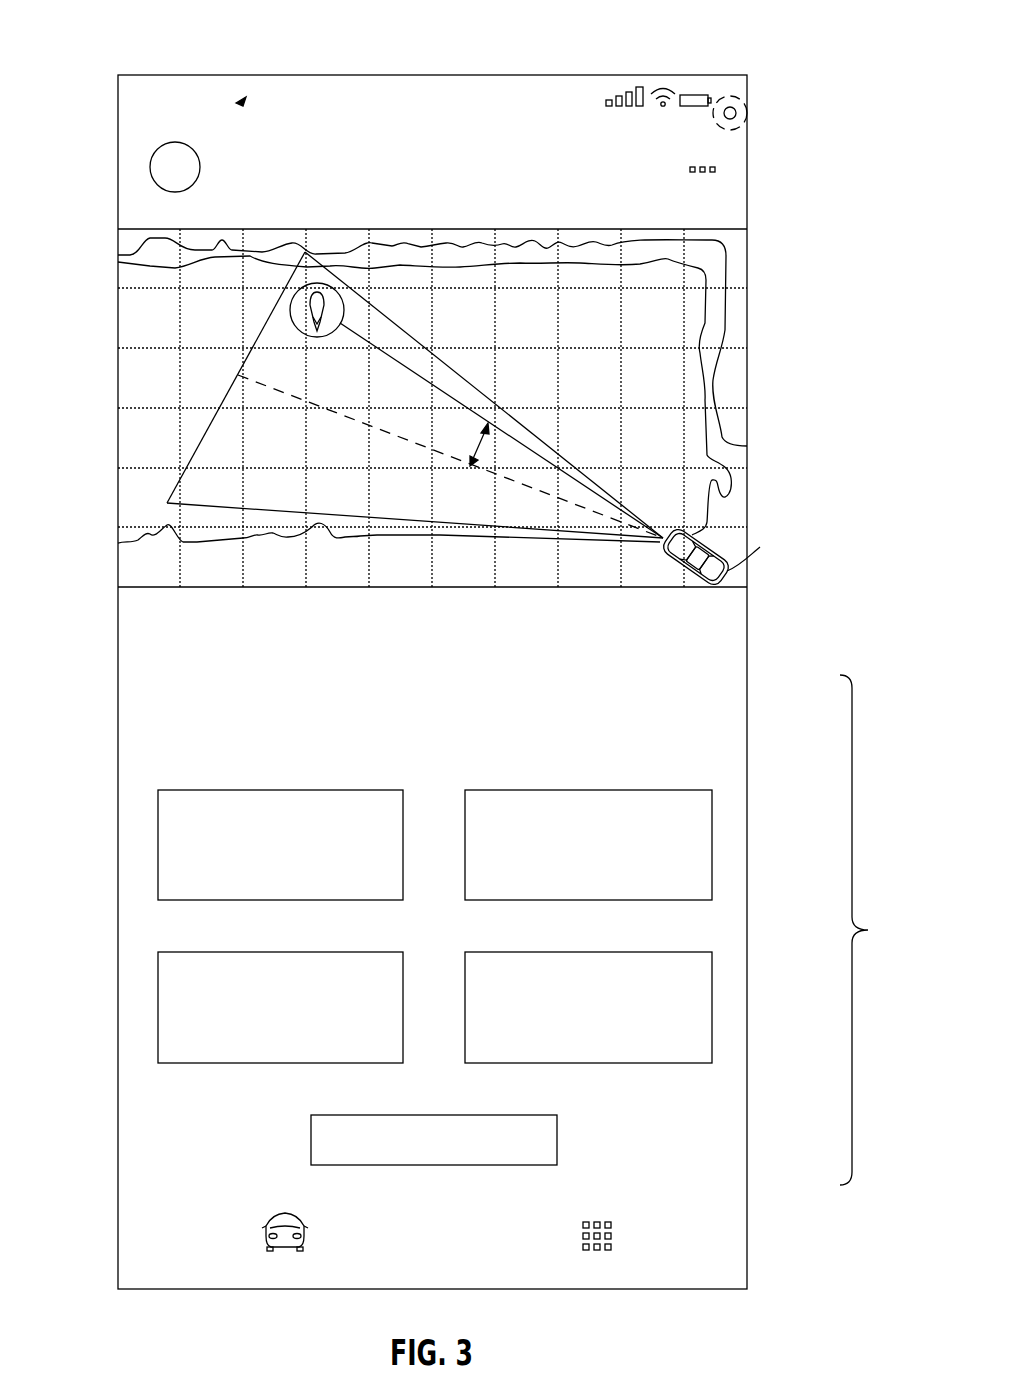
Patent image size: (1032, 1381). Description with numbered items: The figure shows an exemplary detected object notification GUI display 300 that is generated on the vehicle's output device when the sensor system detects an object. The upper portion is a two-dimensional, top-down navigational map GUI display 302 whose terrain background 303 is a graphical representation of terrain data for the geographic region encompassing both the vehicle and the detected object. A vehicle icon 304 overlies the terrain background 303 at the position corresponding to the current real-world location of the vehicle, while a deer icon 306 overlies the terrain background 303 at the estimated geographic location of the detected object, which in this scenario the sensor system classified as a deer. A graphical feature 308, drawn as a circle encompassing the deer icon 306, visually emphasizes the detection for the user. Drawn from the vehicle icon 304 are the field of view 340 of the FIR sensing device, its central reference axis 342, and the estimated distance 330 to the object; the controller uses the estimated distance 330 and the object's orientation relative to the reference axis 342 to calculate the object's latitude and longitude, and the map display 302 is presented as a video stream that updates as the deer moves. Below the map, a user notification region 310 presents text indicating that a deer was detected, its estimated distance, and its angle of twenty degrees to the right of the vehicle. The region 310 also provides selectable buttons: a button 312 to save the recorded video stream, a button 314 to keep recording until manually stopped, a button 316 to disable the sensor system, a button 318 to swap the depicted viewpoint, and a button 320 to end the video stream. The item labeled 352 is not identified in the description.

The detected object notification GUI display 300 is at (665, 43).
The navigational map GUI display 302 is at (751, 323).
The terrain background 303 is at (237, 574).
The vehicle icon 304 is at (726, 567).
The deer icon 306 is at (307, 305).
The graphical feature 308 is at (289, 312).
The user notification region 310 is at (598, 893).
The button to save recorded video stream 312 is at (158, 845).
The button to record until stopped 314 is at (712, 845).
The button to disable sensor system 316 is at (158, 1007).
The button to swap viewpoint 318 is at (712, 1007).
The button to end video stream 320 is at (557, 1140).
The estimated distance 330 is at (450, 394).
The field of view 340 is at (416, 340).
The reference axis 342 is at (377, 430).
The angle indicator between heading and line of sight 352 is at (477, 442).